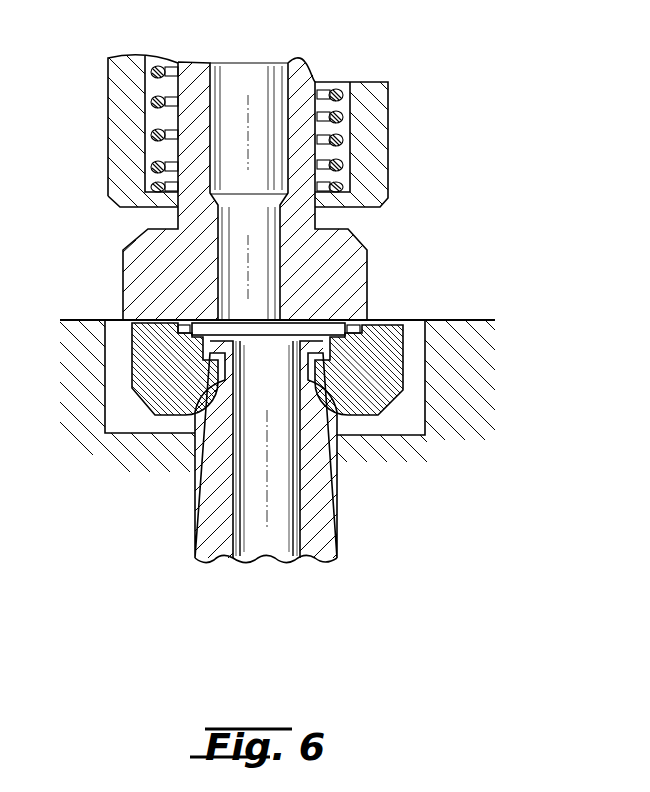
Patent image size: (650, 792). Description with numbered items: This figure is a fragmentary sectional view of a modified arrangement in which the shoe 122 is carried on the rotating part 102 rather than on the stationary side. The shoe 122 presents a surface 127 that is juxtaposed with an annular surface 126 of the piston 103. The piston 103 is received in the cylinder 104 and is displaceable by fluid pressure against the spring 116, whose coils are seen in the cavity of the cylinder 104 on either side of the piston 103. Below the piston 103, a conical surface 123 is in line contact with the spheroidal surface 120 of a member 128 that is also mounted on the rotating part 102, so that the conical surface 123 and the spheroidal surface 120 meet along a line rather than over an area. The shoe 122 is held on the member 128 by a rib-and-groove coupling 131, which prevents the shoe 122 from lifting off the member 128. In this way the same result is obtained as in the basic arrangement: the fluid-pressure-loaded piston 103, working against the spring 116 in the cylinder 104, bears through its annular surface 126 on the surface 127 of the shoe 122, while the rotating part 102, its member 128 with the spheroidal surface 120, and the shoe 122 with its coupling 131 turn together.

The rotating part 102 is at (460, 447).
The piston 103 is at (303, 82).
The cylinder 104 is at (378, 118).
The spring 116 is at (158, 130).
The spheroidal surface 120 is at (203, 393).
The shoe 122 is at (148, 368).
The conical surface 123 is at (337, 418).
The annular surface 126 is at (158, 325).
The surface 127 is at (390, 323).
The member 128 is at (200, 452).
The rib-and-groove coupling 131 is at (390, 407).